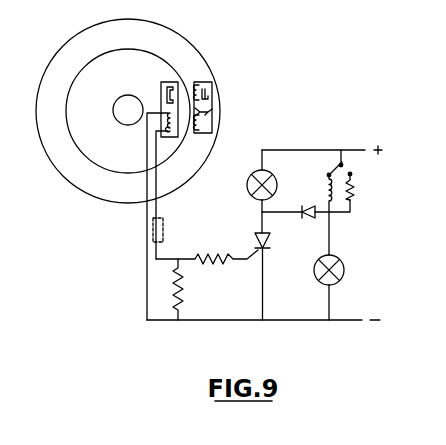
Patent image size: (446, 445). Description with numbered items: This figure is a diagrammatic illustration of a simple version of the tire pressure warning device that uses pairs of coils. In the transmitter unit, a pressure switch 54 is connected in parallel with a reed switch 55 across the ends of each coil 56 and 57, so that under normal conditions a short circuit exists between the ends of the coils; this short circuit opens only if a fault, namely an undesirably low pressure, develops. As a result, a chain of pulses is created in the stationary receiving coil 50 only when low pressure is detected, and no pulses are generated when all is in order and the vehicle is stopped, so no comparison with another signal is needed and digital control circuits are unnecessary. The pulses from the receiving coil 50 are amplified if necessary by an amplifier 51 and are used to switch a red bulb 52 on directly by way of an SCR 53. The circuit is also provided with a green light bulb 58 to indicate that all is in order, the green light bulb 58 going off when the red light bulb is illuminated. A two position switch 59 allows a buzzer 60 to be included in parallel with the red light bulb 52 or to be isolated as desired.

The stationary receiving coil 50 is at (168, 118).
The amplifier 51 is at (163, 228).
The bulb 52 is at (247, 185).
The SCR 53 is at (257, 247).
The pressure switch 54 is at (213, 112).
The reed switch 55 is at (206, 97).
The coil 56 is at (196, 84).
The coil 57 is at (200, 130).
The green light bulb 58 is at (344, 270).
The two position switch 59 is at (327, 175).
The buzzer 60 is at (326, 191).